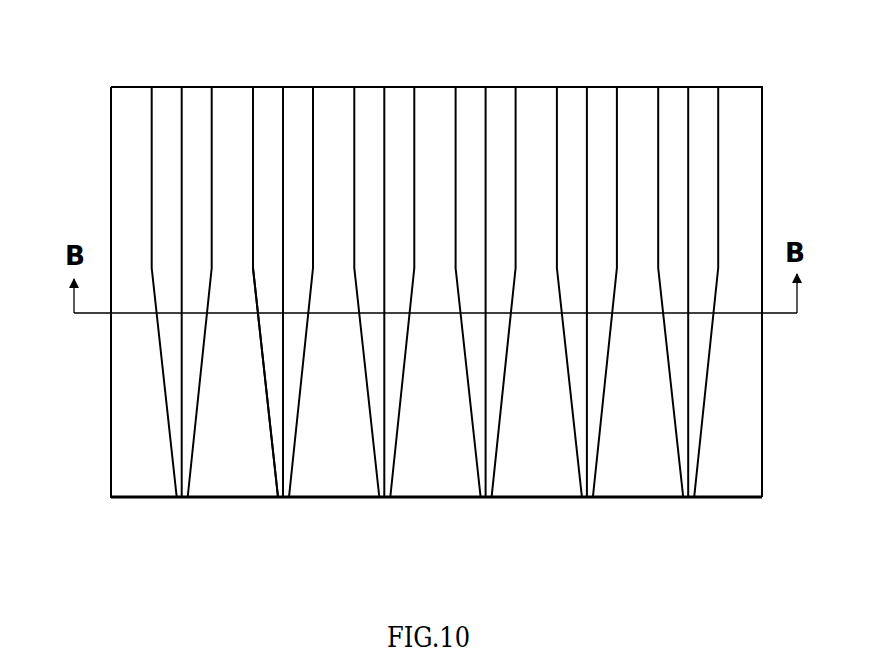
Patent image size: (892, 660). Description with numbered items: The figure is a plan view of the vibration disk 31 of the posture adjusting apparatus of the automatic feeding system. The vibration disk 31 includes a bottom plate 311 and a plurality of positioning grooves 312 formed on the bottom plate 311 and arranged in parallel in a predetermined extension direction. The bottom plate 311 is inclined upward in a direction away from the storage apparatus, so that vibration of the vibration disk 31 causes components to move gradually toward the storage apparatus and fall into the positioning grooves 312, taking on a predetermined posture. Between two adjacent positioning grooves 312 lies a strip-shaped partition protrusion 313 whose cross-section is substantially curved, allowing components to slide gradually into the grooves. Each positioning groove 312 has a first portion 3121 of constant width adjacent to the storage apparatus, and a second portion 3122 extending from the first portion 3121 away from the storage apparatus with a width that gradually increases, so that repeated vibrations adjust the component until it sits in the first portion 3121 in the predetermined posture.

The vibration disk 31 is at (687, 525).
The bottom plate 311 is at (744, 123).
The positioning groove 312 is at (445, 478).
The first portion 3121 is at (540, 128).
The second portion 3122 is at (415, 453).
The partition protrusion 313 is at (268, 173).